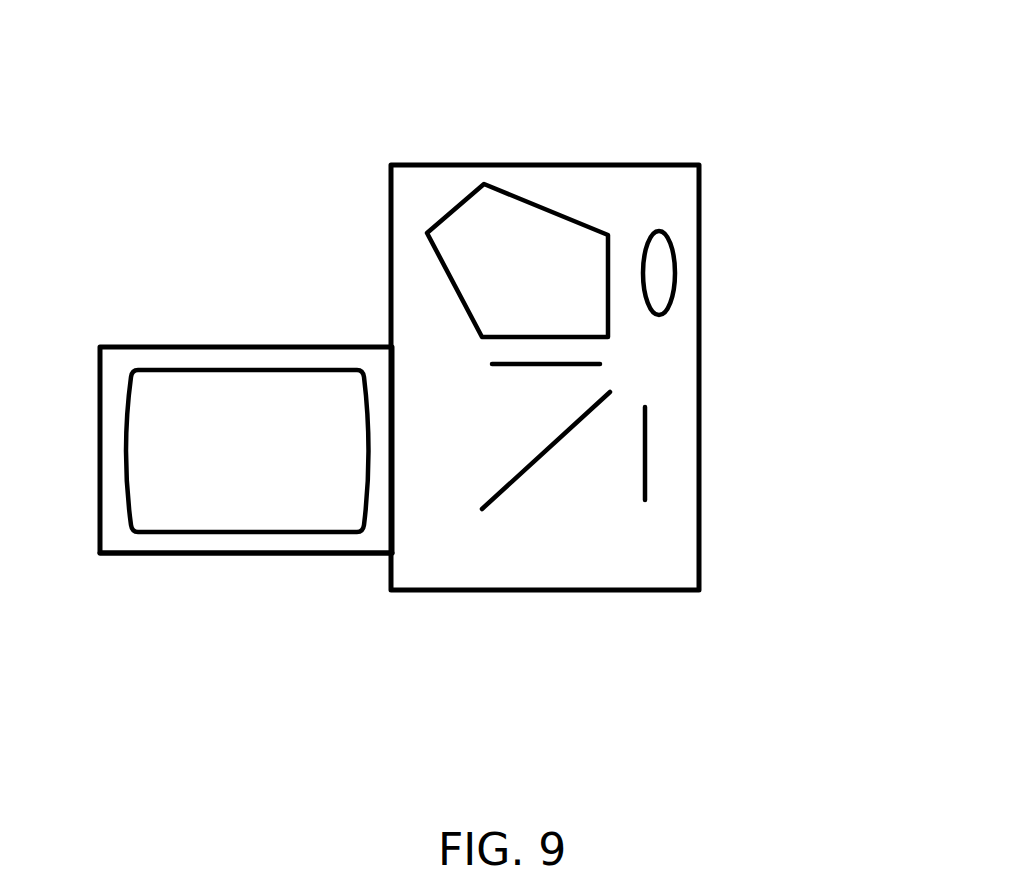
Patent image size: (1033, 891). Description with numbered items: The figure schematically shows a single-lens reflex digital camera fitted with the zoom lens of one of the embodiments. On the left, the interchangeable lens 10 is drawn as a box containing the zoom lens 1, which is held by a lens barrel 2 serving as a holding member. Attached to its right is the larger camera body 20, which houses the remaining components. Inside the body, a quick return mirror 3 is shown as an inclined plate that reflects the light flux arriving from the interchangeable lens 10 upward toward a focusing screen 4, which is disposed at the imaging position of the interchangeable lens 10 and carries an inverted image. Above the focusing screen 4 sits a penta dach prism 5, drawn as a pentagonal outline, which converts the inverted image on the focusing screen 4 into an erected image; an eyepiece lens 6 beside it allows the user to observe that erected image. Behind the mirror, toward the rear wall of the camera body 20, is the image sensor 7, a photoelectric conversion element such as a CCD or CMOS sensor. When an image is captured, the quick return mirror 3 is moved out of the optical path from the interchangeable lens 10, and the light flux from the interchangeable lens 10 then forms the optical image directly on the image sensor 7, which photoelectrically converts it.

The zoom lens 1 is at (218, 373).
The interchangeable lens 10 is at (300, 343).
The lens barrel 2 is at (237, 555).
The camera body 20 is at (702, 127).
The penta dach prism 5 is at (465, 198).
The eyepiece lens 6 is at (672, 277).
The image sensor 7 is at (645, 455).
The focusing screen 4 is at (525, 365).
The quick return mirror 3 is at (518, 478).